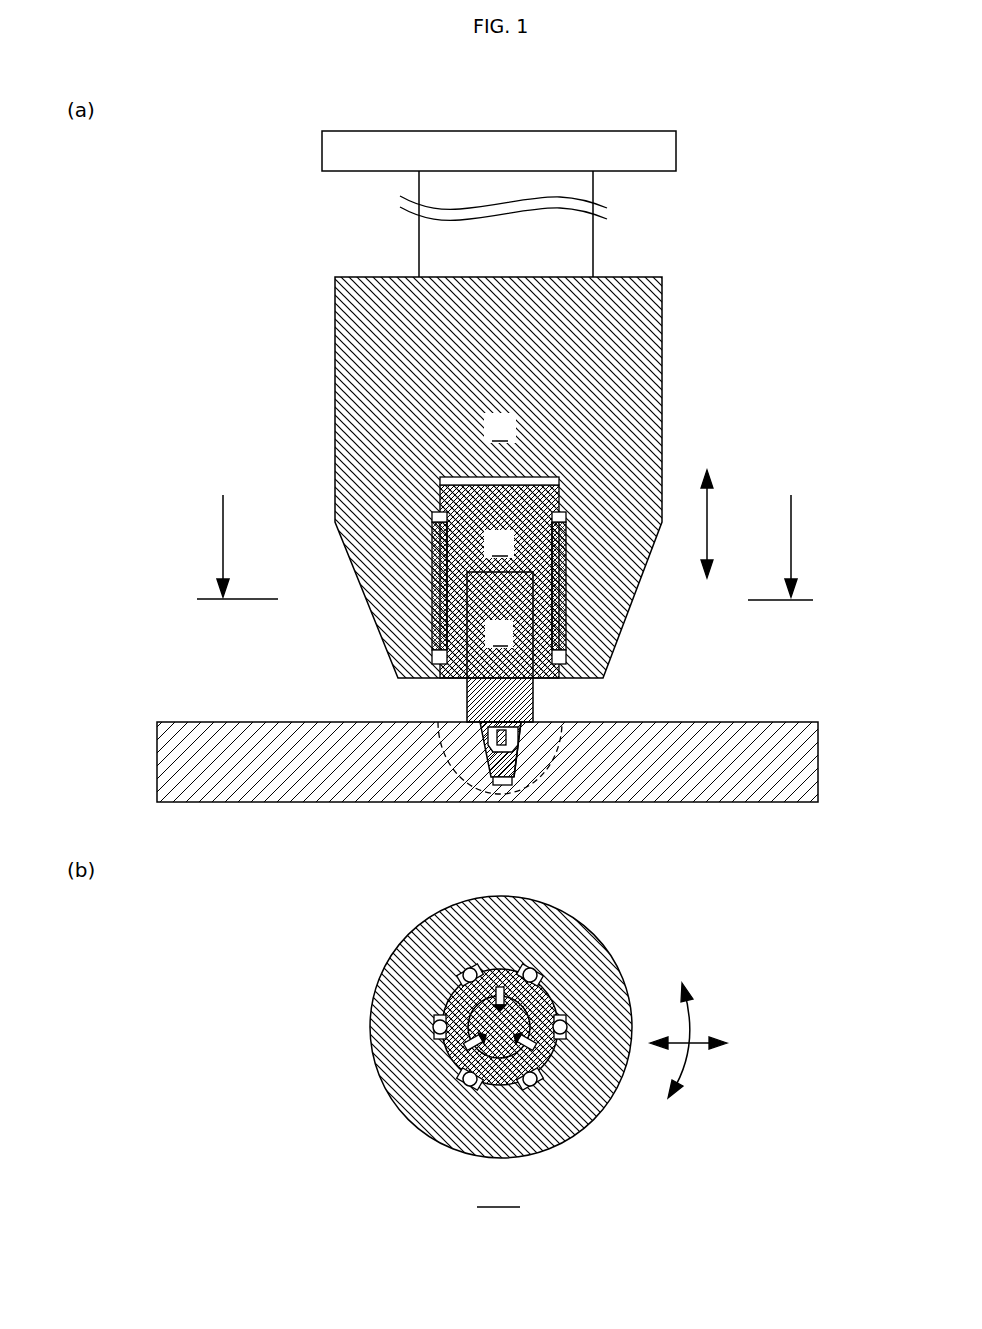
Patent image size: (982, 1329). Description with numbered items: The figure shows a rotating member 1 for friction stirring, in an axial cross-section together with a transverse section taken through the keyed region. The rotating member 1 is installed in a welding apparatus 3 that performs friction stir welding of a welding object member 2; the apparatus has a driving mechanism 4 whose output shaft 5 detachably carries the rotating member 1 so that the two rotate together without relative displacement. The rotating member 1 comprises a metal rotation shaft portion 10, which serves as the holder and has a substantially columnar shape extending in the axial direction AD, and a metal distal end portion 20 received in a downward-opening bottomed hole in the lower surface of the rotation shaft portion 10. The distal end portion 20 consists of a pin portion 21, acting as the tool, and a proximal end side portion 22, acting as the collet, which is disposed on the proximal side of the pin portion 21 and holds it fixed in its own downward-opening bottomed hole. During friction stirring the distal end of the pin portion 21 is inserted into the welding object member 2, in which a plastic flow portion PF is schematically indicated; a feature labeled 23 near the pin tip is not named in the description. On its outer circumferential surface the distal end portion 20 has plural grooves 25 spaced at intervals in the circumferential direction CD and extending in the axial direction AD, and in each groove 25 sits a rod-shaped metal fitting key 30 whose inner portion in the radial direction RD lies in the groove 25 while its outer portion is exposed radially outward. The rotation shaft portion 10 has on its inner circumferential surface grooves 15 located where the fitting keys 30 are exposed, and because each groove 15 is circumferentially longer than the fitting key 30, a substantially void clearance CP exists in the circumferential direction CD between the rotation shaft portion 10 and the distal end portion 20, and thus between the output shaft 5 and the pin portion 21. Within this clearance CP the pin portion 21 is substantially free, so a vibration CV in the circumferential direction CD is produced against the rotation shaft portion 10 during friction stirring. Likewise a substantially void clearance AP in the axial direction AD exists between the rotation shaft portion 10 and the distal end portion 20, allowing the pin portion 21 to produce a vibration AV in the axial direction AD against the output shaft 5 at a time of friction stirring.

The rotating member for friction stirring 1 is at (297, 327).
The welding object member 2 is at (790, 735).
The welding apparatus 3 is at (515, 204).
The driving mechanism 4 is at (322, 150).
The output shaft 5 is at (583, 247).
The rotation shaft portion 10 is at (393, 380).
The grooves 15 is at (437, 602).
The distal end portion 20 is at (315, 762).
The pin portion 21 is at (315, 782).
The proximal end side portion 22 is at (437, 667).
The tip side surface 23 is at (530, 723).
The grooves 25 is at (443, 623).
The fitting key 30 is at (437, 582).
The clearance in the axial direction AP is at (442, 480).
The clearance in the circumferential direction CP is at (432, 540).
The vibration in the circumferential direction CV is at (447, 995).
The axial direction AD is at (723, 524).
The vibration in the axial direction AV is at (508, 785).
The plastic flow portion PF is at (563, 768).
The circumferential direction CD is at (697, 1040).
The radial direction RD is at (703, 1045).